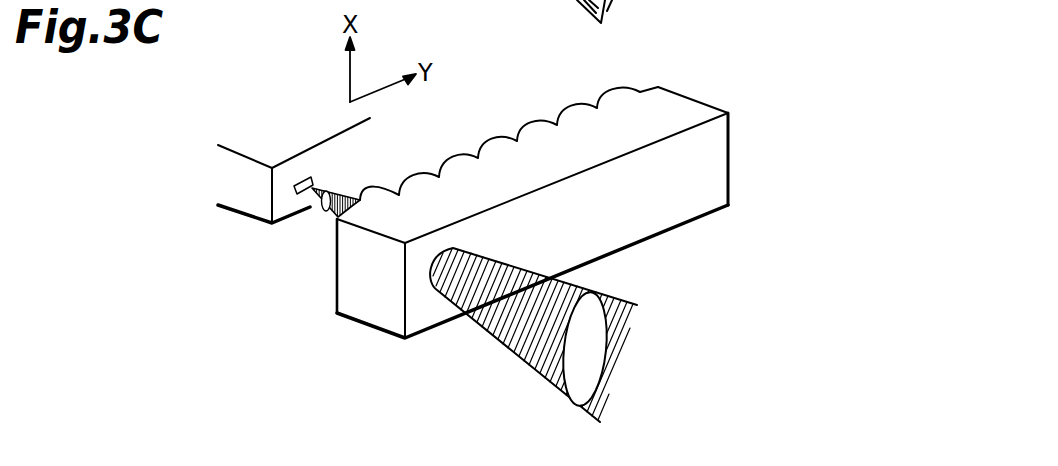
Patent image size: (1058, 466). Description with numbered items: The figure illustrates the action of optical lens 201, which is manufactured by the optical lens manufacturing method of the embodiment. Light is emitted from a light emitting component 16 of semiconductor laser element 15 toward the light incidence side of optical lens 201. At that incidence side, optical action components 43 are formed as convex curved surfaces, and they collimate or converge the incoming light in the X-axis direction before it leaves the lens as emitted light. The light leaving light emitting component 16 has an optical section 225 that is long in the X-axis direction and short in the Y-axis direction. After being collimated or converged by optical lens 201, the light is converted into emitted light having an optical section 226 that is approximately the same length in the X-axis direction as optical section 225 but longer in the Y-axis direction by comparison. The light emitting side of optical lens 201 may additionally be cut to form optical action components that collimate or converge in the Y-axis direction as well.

The semiconductor laser element 15 is at (255, 198).
The light emitting component 16 is at (303, 163).
The optical action component 43 is at (603, 97).
The optical lens 201 is at (738, 98).
The optical section 225 is at (333, 190).
The optical section 226 is at (598, 340).